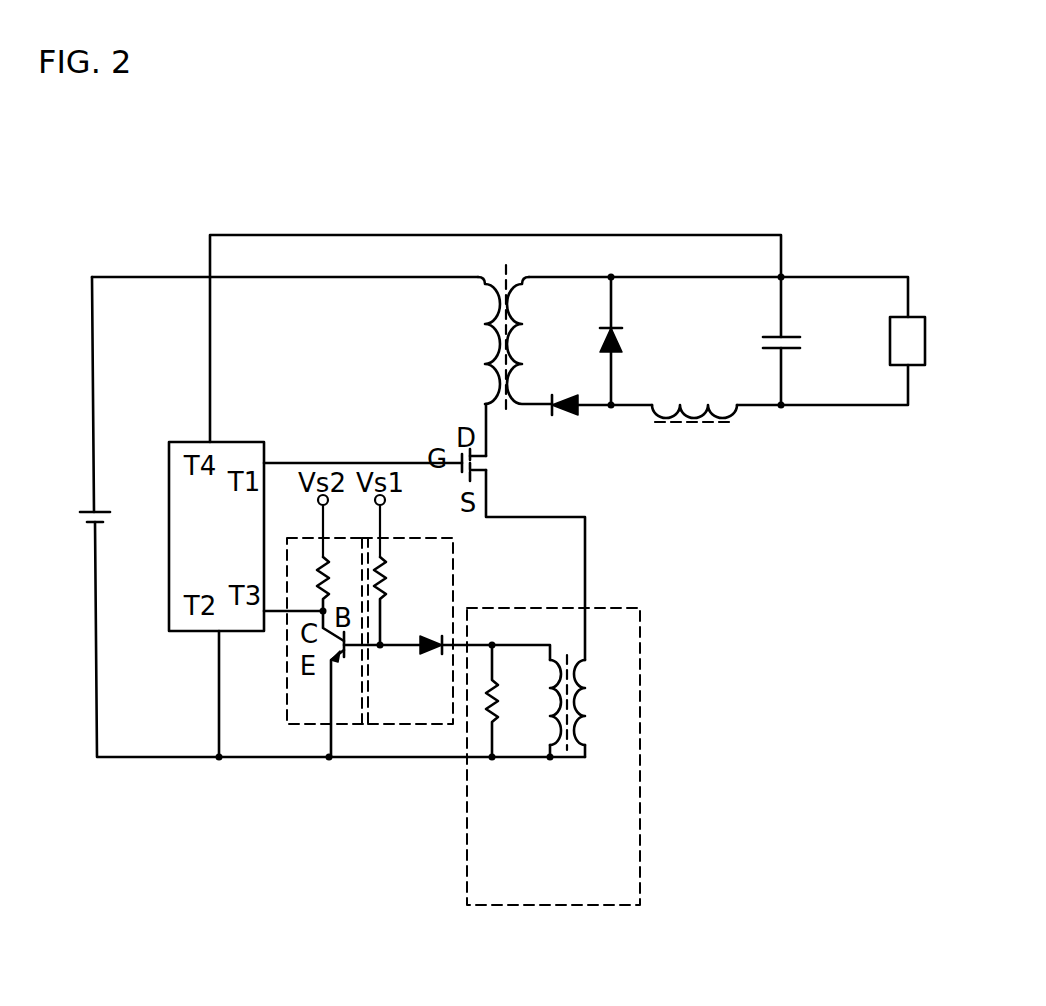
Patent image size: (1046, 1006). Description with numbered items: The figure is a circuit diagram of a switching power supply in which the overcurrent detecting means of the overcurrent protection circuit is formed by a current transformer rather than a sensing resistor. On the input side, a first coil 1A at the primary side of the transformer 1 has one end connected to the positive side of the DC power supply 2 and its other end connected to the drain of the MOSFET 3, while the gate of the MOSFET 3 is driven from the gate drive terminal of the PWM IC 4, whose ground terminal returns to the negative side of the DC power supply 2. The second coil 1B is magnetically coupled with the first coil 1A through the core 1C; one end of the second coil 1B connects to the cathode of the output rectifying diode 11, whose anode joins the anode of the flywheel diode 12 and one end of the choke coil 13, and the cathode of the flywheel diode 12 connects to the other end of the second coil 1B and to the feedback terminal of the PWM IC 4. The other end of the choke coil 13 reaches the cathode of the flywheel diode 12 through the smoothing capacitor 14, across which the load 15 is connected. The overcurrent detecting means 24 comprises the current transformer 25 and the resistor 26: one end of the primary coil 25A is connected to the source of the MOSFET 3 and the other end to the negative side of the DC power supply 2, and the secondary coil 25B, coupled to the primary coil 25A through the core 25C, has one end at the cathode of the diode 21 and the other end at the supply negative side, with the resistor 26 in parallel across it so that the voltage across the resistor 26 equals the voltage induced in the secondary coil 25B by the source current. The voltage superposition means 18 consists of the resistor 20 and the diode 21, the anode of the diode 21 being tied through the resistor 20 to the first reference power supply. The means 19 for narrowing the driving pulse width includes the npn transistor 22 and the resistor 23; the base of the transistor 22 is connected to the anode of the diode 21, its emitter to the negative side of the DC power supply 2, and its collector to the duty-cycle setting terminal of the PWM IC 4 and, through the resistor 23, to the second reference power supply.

The transformer 1 is at (507, 277).
The first coil 1A is at (474, 293).
The second coil 1B is at (506, 263).
The core 1C is at (535, 300).
The DC power supply 2 is at (80, 516).
The MOSFET 3 is at (489, 469).
The PWM IC 4 is at (196, 444).
The output rectifying diode 11 is at (552, 418).
The flywheel diode 12 is at (622, 337).
The choke coil 13 is at (712, 427).
The smoothing capacitor 14 is at (803, 344).
The load 15 is at (921, 330).
The voltage superposition means 18 is at (407, 647).
The means for narrowing driving pulse width 19 is at (325, 647).
The resistor 20 is at (391, 595).
The diode 21 is at (425, 655).
The npn transistor 22 is at (343, 684).
The resistor 23 is at (340, 584).
The overcurrent detecting means 24 is at (553, 781).
The current transformer 25 is at (563, 780).
The primary coil 25A is at (603, 741).
The secondary coil 25B is at (541, 760).
The core 25C is at (567, 760).
The resistor 26 is at (512, 701).